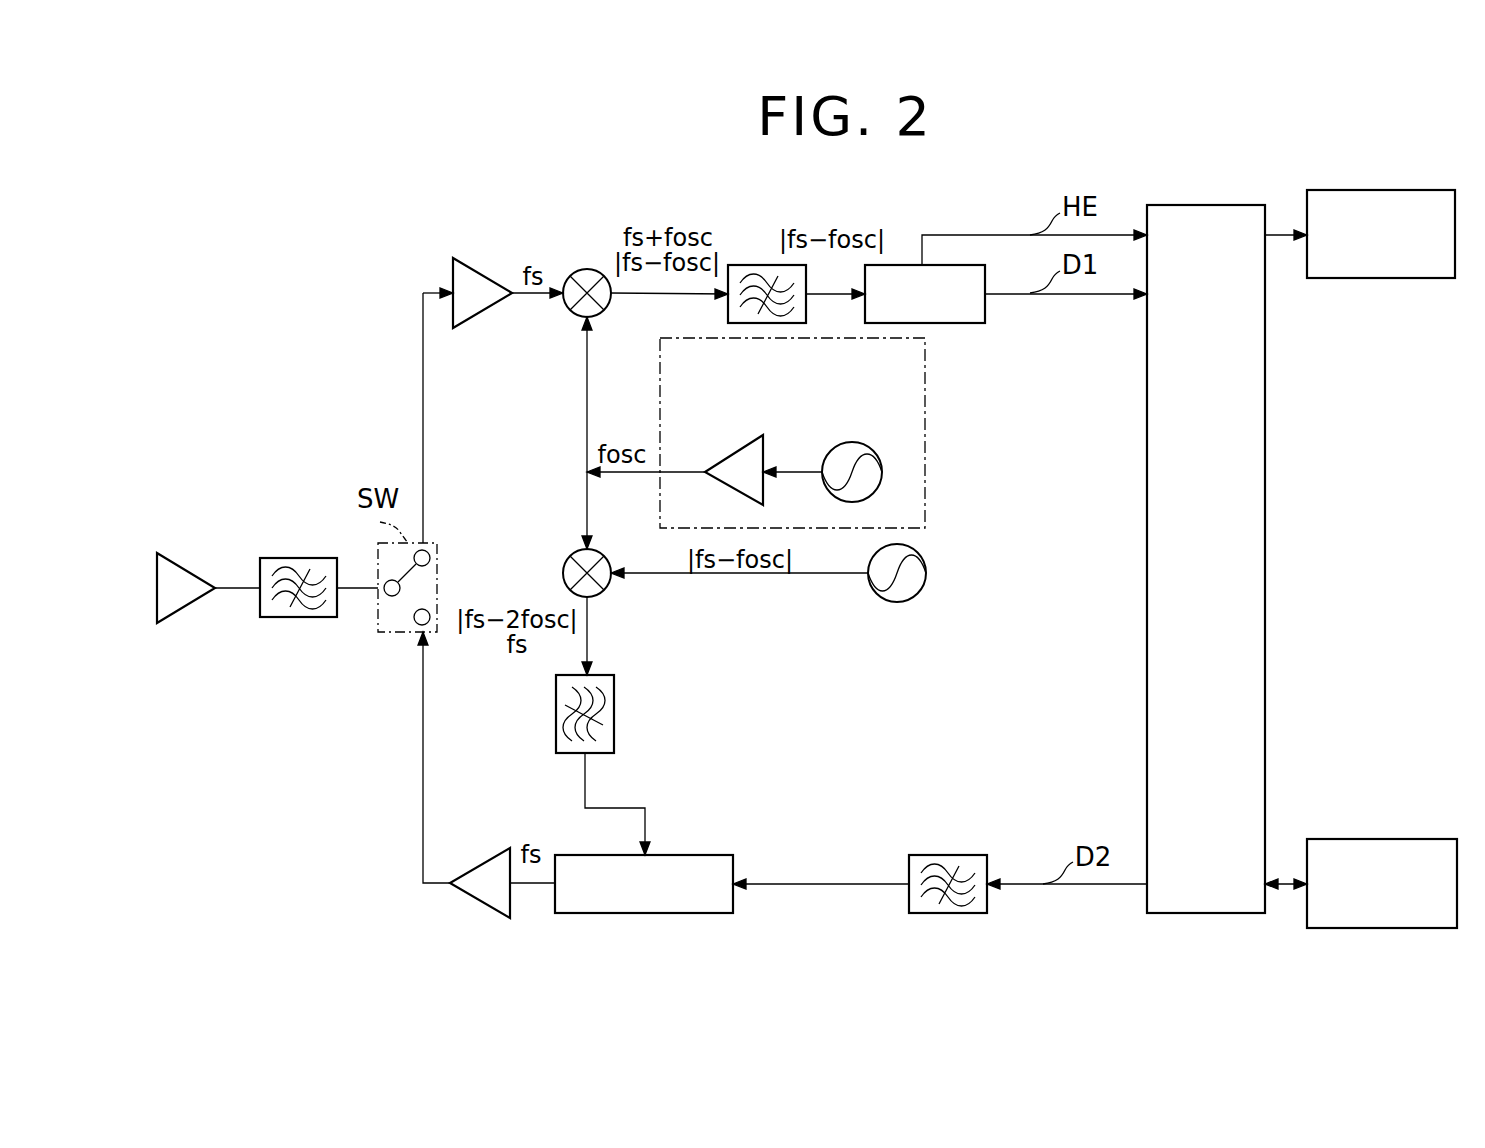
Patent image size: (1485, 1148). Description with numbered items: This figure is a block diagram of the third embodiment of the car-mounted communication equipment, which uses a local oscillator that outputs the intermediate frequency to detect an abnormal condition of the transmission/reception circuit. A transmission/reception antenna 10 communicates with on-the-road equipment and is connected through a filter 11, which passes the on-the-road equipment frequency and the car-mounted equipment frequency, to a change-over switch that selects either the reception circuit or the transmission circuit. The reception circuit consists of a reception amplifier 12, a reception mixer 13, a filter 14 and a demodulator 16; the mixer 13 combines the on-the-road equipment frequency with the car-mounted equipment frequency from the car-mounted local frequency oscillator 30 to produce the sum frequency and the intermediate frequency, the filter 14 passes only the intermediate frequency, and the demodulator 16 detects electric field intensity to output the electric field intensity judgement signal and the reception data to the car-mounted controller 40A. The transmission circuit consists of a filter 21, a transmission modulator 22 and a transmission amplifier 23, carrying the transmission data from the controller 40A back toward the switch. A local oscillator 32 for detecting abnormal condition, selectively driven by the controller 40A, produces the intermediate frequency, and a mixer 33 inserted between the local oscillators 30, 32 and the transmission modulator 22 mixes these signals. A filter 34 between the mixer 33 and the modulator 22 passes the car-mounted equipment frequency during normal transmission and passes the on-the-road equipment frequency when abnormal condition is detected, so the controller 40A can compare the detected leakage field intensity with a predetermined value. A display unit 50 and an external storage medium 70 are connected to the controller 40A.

The transmission/reception antenna 10 is at (185, 557).
The filter 11 is at (298, 558).
The reception amplifier 12 is at (483, 270).
The reception mixer 13 is at (583, 272).
The filter 14 is at (760, 262).
The demodulator 16 is at (893, 262).
The filter 21 is at (940, 853).
The transmission modulator 22 is at (668, 853).
The transmission amplifier 23 is at (482, 858).
The car-mounted local frequency oscillator 30 is at (925, 432).
The local oscillator for detecting abnormal condition 32 is at (927, 573).
The mixer for detecting abnormal condition 33 is at (600, 553).
The filter 34 is at (614, 712).
The car-mounted controller 40A is at (1265, 538).
The display unit 50 is at (1392, 190).
The external storage medium 70 is at (1382, 839).